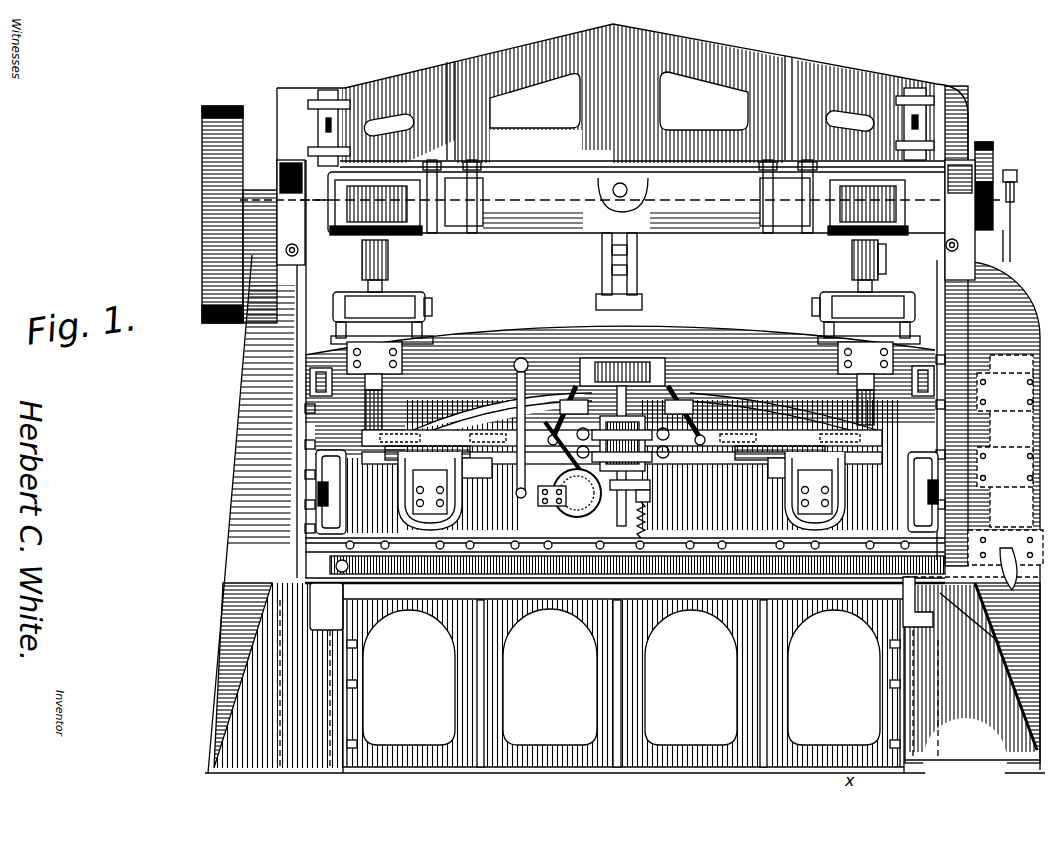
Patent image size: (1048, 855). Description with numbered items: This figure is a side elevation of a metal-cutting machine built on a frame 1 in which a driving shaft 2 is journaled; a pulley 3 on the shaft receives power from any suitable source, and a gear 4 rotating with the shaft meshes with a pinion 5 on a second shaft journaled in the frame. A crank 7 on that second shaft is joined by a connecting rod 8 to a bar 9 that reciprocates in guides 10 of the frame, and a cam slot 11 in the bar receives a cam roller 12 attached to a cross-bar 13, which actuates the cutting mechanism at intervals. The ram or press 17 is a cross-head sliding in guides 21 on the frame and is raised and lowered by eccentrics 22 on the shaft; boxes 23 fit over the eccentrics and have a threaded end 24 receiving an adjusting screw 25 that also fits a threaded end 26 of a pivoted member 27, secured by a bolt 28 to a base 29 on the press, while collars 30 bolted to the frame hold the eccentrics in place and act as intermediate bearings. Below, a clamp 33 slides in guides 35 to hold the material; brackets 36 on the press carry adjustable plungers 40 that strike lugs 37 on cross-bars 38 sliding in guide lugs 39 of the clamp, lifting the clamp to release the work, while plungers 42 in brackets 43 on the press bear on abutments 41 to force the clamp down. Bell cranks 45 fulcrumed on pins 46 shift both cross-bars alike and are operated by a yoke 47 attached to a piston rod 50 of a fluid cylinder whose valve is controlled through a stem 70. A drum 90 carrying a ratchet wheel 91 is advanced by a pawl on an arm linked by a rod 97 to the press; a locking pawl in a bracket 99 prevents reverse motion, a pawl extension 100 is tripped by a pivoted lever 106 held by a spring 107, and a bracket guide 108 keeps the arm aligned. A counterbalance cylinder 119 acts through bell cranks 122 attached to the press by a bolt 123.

The frame 1 is at (252, 360).
The driving shaft 2 is at (527, 224).
The pulley 3 is at (212, 157).
The gear 4 is at (993, 215).
The pinion 5 is at (985, 146).
The crank 7 is at (1012, 178).
The connecting rod 8 is at (1005, 258).
The bar 9 is at (1004, 411).
The guides 10 is at (1032, 382).
The cam slot 11 is at (1008, 545).
The cam roller 12 is at (985, 593).
The cross-bar 13 is at (948, 565).
The ram or press 17 is at (620, 377).
The guides 21 is at (315, 382).
The eccentrics 22 is at (420, 230).
The boxes 23 is at (400, 236).
The threaded end 24 is at (392, 262).
The adjusting screw 25 is at (878, 255).
The threaded end 26 is at (885, 262).
The pivoted member 27 is at (426, 304).
The bolt 28 is at (432, 312).
The base 29 is at (388, 288).
The collars 30 is at (520, 230).
The clamp 33 is at (625, 530).
The guides 35 is at (330, 494).
The brackets 36 is at (800, 492).
The lugs 37 is at (495, 398).
The cross-bars 38 is at (392, 462).
The guide lugs 39 is at (518, 470).
The plungers 40 is at (520, 485).
The abutments 41 is at (384, 404).
The plungers 42 is at (384, 382).
The brackets 43 is at (402, 362).
The bell cranks 45 is at (570, 384).
The pins 46 is at (568, 402).
The yoke 47 is at (640, 372).
The piston rod 50 is at (634, 483).
The valve stem 70 is at (623, 456).
The drum 90 is at (605, 590).
The ratchet wheel 91 is at (582, 500).
The rod 97 is at (515, 372).
The bracket 99 is at (557, 442).
The extension 100 is at (625, 578).
The pivoted lever 106 is at (657, 500).
The spring 107 is at (650, 516).
The bracket guide 108 is at (535, 509).
The counterbalance cylinder 119 is at (630, 190).
The bell cranks 122 is at (619, 271).
The bolt 123 is at (604, 282).